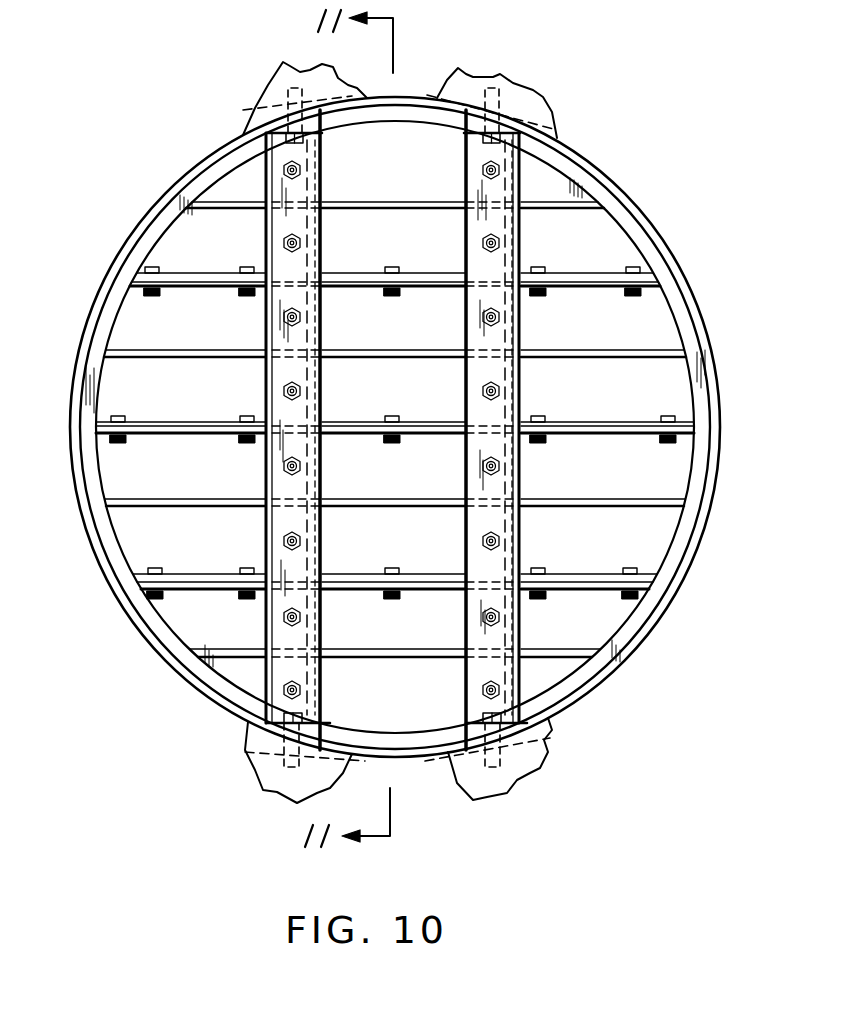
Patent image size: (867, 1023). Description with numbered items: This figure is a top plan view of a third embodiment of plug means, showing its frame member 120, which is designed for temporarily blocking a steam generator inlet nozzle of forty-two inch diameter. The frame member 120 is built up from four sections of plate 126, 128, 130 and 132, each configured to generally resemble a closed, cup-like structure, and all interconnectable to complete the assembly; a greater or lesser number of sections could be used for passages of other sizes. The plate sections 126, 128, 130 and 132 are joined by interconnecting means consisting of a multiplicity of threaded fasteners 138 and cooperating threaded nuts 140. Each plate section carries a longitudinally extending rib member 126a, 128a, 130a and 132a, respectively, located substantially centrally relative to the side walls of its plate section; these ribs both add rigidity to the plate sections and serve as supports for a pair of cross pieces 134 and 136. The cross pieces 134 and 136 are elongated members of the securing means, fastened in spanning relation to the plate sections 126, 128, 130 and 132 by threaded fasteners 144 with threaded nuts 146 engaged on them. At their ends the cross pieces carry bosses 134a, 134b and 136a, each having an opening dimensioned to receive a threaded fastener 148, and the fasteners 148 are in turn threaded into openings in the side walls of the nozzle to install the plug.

The frame member 120 is at (641, 212).
The plate section 126 is at (175, 247).
The rib member 126a is at (409, 198).
The plate section 128 is at (128, 323).
The rib member 128a is at (416, 345).
The plate section 130 is at (126, 541).
The rib member 130a is at (411, 496).
The plate section 132 is at (175, 622).
The rib member 132a is at (406, 647).
The cross piece 134 is at (265, 240).
The boss 134a is at (280, 128).
The boss 134b is at (272, 739).
The cross piece 136 is at (521, 249).
The boss 136a is at (507, 128).
The threaded fastener 138 is at (540, 274).
The threaded nut 140 is at (540, 294).
The threaded fastener 144 is at (482, 242).
The threaded nut 146 is at (485, 247).
The threaded fastener 148 is at (272, 158).